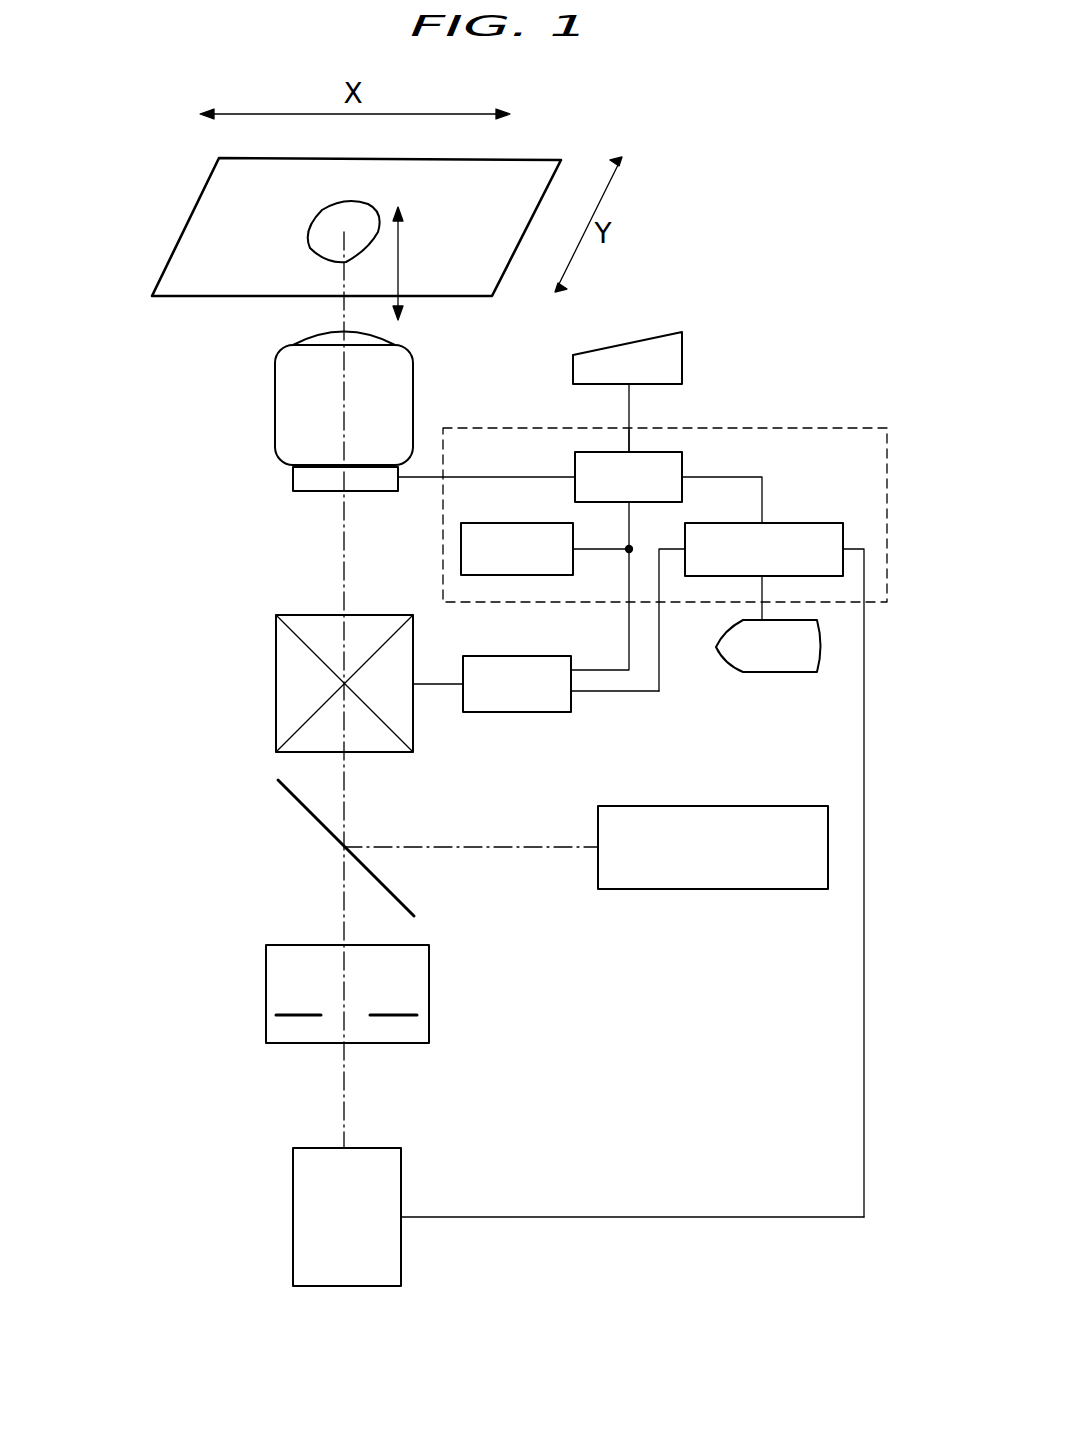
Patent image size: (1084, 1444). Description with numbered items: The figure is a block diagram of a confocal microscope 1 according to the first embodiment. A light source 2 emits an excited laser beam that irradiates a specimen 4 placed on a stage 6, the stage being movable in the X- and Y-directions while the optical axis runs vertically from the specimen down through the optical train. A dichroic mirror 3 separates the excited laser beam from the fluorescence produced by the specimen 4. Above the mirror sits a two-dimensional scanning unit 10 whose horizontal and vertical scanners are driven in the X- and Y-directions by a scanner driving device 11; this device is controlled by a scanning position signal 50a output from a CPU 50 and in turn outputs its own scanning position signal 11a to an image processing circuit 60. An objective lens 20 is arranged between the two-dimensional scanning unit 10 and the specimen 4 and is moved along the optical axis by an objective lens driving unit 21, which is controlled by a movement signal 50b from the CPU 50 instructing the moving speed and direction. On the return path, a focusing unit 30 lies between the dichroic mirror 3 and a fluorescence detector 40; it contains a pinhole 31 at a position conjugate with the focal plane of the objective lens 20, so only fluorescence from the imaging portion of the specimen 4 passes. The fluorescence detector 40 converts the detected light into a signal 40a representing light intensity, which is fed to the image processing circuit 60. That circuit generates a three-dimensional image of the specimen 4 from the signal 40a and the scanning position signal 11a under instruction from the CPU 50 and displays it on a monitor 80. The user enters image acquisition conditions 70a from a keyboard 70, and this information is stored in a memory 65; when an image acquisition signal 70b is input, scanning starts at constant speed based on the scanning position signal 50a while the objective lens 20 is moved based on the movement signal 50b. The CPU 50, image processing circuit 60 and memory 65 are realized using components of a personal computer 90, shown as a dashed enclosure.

The confocal microscope 1 is at (752, 222).
The light source 2 is at (686, 806).
The dichroic mirror 3 is at (284, 787).
The specimen 4 is at (330, 222).
The stage 6 is at (540, 158).
The two-dimensional scanning unit 10 is at (276, 640).
The scanner driving device 11 is at (485, 712).
The scanning position signal 11a is at (625, 691).
The objective lens 20 is at (275, 375).
The objective lens driving unit 21 is at (293, 480).
The focusing unit 30 is at (266, 963).
The pinhole 31 is at (391, 1019).
The fluorescence detector 40 is at (293, 1170).
The signal 40a is at (560, 1217).
The CPU 50 is at (683, 455).
The scanning position signal 50a is at (629, 628).
The movement signal 50b is at (420, 478).
The image processing circuit 60 is at (825, 522).
The memory 65 is at (519, 522).
The keyboard 70 is at (683, 337).
The image acquisition conditions 70a is at (630, 402).
The image acquisition signal 70b is at (628, 442).
The monitor 80 is at (756, 672).
The personal computer 90 is at (857, 428).